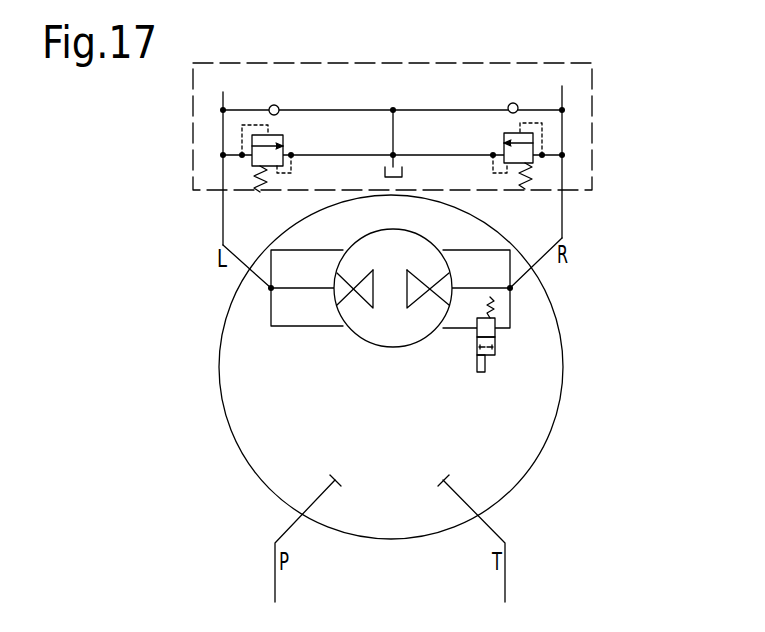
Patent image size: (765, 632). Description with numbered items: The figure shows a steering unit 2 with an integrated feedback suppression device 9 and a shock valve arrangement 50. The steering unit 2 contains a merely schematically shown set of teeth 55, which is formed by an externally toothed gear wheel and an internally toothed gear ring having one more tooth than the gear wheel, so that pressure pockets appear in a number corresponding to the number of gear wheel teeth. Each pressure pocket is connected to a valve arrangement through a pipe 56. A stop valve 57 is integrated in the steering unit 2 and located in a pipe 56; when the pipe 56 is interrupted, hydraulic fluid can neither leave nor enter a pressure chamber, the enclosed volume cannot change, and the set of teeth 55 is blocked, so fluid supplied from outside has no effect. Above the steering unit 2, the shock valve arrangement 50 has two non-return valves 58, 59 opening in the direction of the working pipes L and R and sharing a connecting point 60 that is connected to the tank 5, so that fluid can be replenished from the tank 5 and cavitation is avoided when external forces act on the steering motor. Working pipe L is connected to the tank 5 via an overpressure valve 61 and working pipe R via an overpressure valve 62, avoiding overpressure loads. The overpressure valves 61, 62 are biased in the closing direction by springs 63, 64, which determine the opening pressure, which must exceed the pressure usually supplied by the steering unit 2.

The steering unit 2 is at (535, 425).
The tank 5 is at (402, 177).
The feedback suppression device 9 is at (520, 333).
The shock valve arrangement 50 is at (592, 143).
The set of teeth 55 is at (387, 337).
The pipe 56 is at (303, 330).
The stop valve 57 is at (505, 360).
The non-return valve 58 is at (277, 105).
The non-return valve 59 is at (509, 102).
The connecting point 60 is at (393, 110).
The overpressure valve 61 is at (253, 162).
The overpressure valve 62 is at (542, 130).
The spring 63 is at (256, 188).
The spring 64 is at (530, 183).